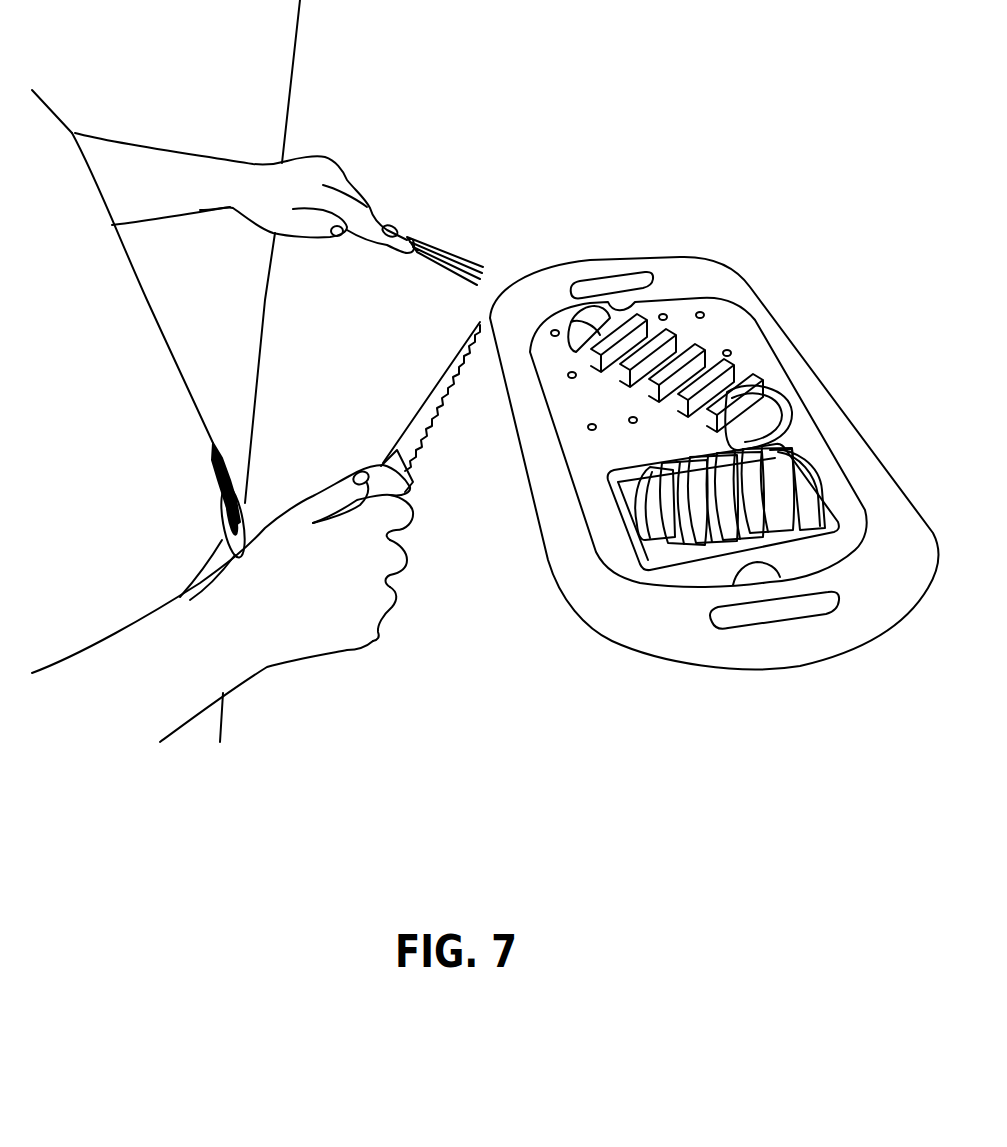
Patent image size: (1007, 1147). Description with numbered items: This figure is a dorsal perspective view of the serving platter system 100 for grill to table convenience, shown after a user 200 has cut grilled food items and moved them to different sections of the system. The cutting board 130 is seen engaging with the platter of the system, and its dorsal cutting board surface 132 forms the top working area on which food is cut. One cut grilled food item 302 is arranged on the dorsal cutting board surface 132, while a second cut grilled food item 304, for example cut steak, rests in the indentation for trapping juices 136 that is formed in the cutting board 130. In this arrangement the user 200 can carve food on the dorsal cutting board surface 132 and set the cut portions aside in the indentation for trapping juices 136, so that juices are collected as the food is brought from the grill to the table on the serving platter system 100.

The serving platter system 100 is at (845, 348).
The cutting board 130 is at (605, 566).
The dorsal cutting board surface 132 is at (730, 337).
The indentation for trapping juices 136 is at (625, 493).
The user 200 is at (62, 114).
The cut grilled food item 302 is at (675, 337).
The cut grilled food item 304 is at (797, 460).